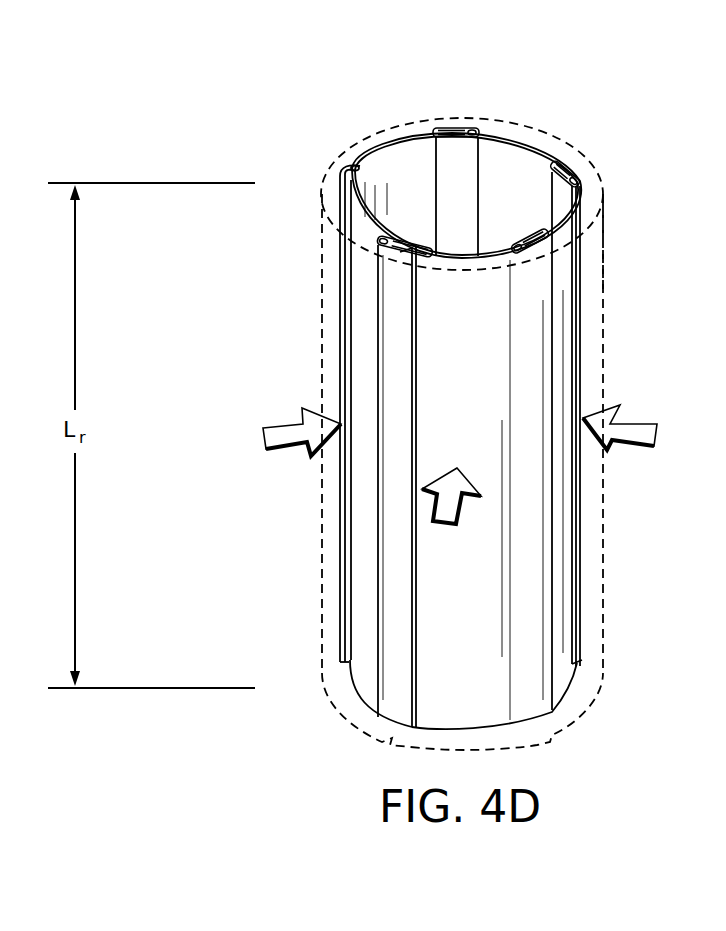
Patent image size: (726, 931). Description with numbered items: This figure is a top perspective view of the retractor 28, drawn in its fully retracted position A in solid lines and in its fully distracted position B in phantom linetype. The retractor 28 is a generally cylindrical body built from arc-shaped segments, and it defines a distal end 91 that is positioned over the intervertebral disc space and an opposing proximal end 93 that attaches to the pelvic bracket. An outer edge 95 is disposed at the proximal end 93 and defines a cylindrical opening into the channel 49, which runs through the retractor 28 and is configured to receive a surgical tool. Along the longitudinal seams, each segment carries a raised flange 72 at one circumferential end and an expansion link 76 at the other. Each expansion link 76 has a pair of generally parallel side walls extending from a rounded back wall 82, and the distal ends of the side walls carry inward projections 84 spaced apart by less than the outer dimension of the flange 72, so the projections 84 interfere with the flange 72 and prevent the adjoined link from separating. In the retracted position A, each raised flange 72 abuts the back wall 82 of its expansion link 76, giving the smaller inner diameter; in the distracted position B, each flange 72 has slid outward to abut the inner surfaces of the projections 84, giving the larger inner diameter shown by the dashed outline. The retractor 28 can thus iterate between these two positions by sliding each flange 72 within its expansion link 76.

The retractor 28 is at (295, 138).
The raised flange 72 is at (388, 240).
The channel 49 is at (459, 158).
The fully retracted position A is at (522, 160).
The outer edge 95 is at (552, 160).
The proximal end 93 is at (603, 223).
The fully distracted position B is at (603, 265).
The back wall 82 is at (380, 241).
The projections 84 is at (415, 275).
The expansion link 76 is at (384, 412).
The distal end 91 is at (603, 625).